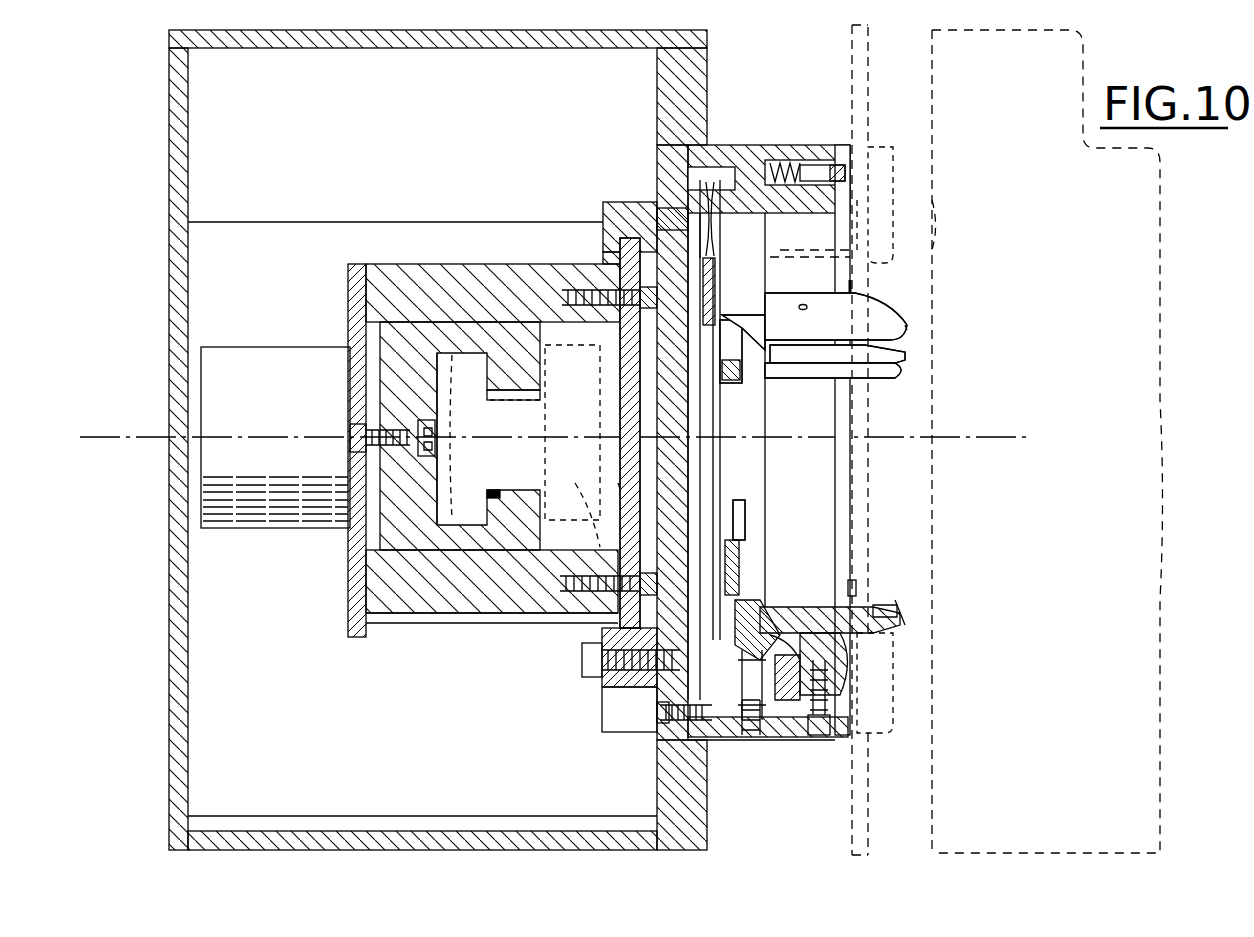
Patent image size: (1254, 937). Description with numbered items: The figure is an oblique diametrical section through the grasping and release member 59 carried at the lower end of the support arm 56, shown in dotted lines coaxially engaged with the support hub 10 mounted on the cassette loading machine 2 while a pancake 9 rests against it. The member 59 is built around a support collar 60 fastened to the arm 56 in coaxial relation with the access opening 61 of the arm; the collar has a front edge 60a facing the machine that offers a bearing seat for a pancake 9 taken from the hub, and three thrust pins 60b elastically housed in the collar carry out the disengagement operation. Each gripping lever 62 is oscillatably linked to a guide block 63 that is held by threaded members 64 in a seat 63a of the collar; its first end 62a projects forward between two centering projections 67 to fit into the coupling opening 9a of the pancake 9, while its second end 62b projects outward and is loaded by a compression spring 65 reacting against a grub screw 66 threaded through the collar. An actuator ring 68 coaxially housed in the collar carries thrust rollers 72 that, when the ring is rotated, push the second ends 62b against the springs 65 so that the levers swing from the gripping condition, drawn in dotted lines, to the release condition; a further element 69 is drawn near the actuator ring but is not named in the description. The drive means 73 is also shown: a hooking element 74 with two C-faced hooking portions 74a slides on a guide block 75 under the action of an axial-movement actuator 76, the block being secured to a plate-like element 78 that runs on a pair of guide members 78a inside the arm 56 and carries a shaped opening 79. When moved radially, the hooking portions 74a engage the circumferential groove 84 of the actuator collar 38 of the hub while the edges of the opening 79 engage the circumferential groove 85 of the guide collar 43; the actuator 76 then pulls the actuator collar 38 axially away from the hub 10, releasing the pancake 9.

The cassette loading machine 2 is at (1165, 260).
The pancake 9 is at (880, 47).
The coupling opening 9a is at (945, 225).
The support hub 10 is at (905, 698).
The actuator collar 38 is at (553, 300).
The guide collar 43 is at (555, 520).
The support arm 56 is at (178, 185).
The grasping and release member 59 is at (870, 206).
The support collar 60 is at (757, 145).
The front edge 60a is at (850, 155).
The thrust pins 60b is at (820, 165).
The access opening 61 is at (665, 368).
The gripping lever 62 is at (820, 363).
The first end 62a is at (895, 370).
The second end 62b is at (748, 315).
The guide block 63 is at (830, 320).
The seat 63a is at (780, 700).
The threaded members 64 is at (815, 717).
The compression spring 65 is at (740, 680).
The grub screw 66 is at (750, 735).
The centering projections 67 is at (907, 325).
The actuator ring 68 is at (712, 470).
The guide pin 69 is at (722, 225).
The thrust rollers 72 is at (730, 383).
The drive means 73 is at (472, 645).
The hooking element 74 is at (420, 535).
The hooking portions 74a is at (487, 375).
The guide block 75 is at (545, 600).
The axial-movement actuator 76 is at (275, 365).
The plate-like element 78 is at (620, 610).
The guide members 78a is at (622, 205).
The shaped opening 79 is at (625, 420).
The circumferential groove 84 is at (512, 400).
The circumferential groove 85 is at (612, 520).